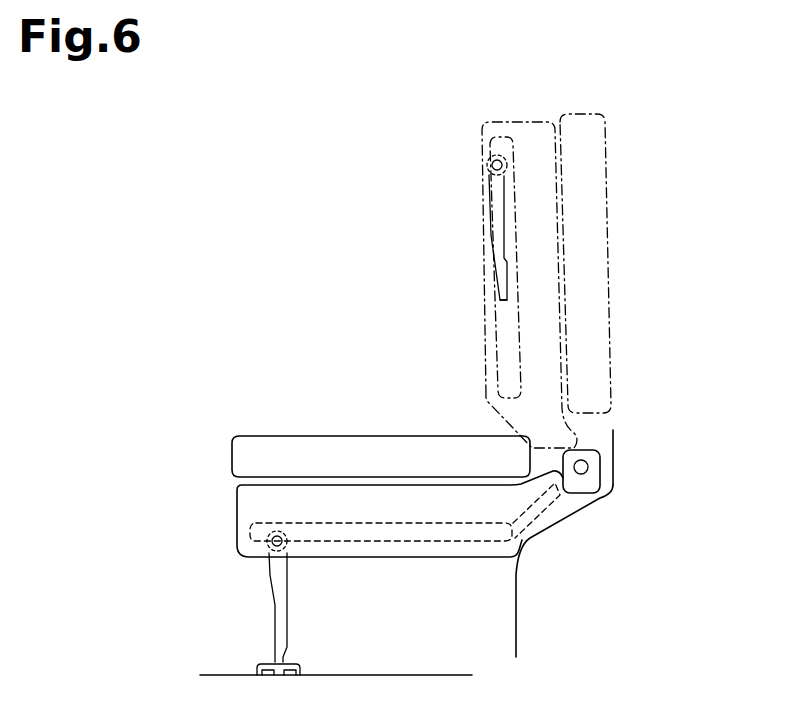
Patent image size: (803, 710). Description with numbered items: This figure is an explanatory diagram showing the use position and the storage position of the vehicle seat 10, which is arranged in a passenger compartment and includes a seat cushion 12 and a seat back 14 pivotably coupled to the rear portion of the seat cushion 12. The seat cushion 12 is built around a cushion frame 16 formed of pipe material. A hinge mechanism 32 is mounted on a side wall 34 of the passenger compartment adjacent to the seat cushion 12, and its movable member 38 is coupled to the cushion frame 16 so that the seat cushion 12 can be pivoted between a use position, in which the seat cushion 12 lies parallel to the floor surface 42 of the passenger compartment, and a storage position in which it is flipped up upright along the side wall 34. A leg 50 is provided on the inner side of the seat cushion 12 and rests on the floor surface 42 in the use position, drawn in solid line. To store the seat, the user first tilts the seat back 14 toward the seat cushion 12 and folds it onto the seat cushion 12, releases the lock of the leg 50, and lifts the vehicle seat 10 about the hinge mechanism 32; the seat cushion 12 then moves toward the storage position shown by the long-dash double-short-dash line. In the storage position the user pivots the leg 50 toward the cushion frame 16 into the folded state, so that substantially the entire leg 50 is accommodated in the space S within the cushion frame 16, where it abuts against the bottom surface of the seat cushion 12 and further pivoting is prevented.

The vehicle seat 10 is at (292, 381).
The seat cushion 12 is at (237, 510).
The seat back 14 is at (233, 460).
The cushion frame 16 is at (351, 523).
The hinge mechanism 32 is at (597, 477).
The side wall 34 is at (609, 446).
The movable member 38 is at (558, 518).
The floor surface 42 is at (402, 675).
The leg 50 is at (281, 579).
The space S is at (505, 322).